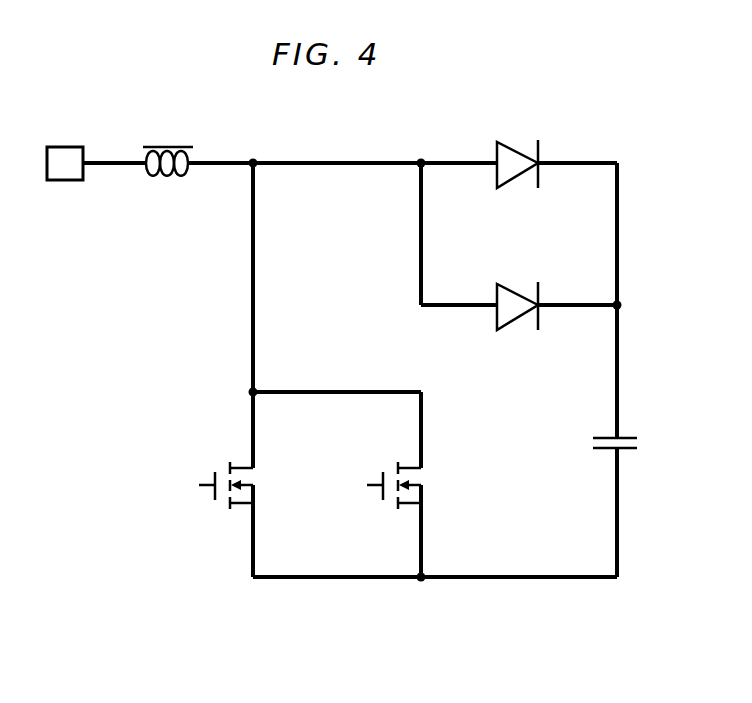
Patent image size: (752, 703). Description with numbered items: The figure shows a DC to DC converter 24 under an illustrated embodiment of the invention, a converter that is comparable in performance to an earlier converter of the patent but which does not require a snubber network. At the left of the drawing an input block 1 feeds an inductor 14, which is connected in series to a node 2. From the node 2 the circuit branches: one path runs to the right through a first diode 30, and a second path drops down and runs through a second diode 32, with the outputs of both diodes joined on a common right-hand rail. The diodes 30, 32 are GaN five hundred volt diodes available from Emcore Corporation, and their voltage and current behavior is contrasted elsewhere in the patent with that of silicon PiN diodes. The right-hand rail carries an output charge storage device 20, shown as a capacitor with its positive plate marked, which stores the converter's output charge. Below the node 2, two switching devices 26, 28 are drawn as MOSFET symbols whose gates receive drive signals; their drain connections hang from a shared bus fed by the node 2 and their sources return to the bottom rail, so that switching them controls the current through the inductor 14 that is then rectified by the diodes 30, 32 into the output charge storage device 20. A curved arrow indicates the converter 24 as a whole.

The input source / battery 1 is at (65, 144).
The node 2 is at (241, 149).
The inductor 14 is at (152, 173).
The output charge storage device 20 is at (603, 448).
The DC to DC converter 24 is at (556, 637).
The first MOSFET switch 26 is at (215, 474).
The second MOSFET switch 28 is at (383, 474).
The diode 30 is at (518, 177).
The diode 32 is at (518, 319).